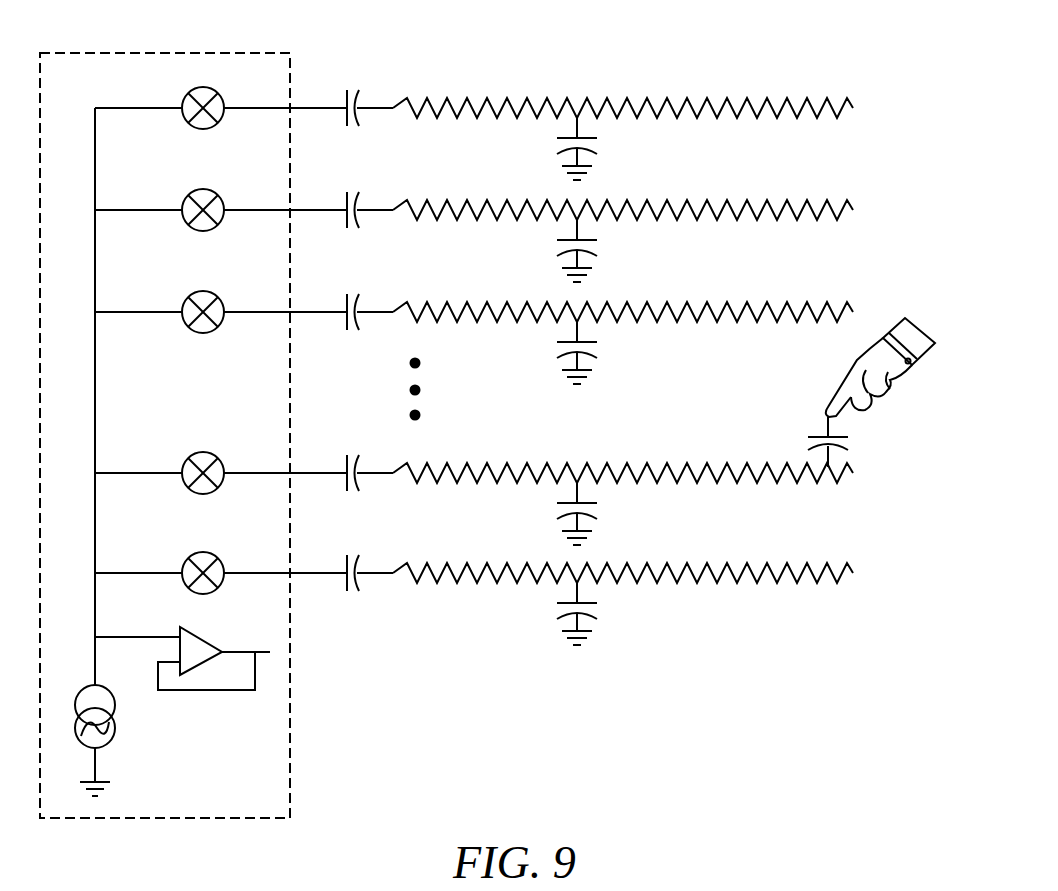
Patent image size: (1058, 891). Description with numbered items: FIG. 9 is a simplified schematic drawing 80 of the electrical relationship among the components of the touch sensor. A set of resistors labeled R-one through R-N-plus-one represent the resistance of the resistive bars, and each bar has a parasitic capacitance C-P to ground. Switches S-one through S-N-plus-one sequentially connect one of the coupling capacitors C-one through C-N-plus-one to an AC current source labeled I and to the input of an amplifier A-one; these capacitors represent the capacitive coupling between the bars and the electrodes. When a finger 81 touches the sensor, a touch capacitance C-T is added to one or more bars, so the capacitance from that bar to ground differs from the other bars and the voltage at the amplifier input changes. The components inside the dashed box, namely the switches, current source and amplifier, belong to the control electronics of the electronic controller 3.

The touch sensor circuit 80 is at (598, 35).
The finger 81 is at (857, 363).
The electronic controller 3 is at (277, 769).